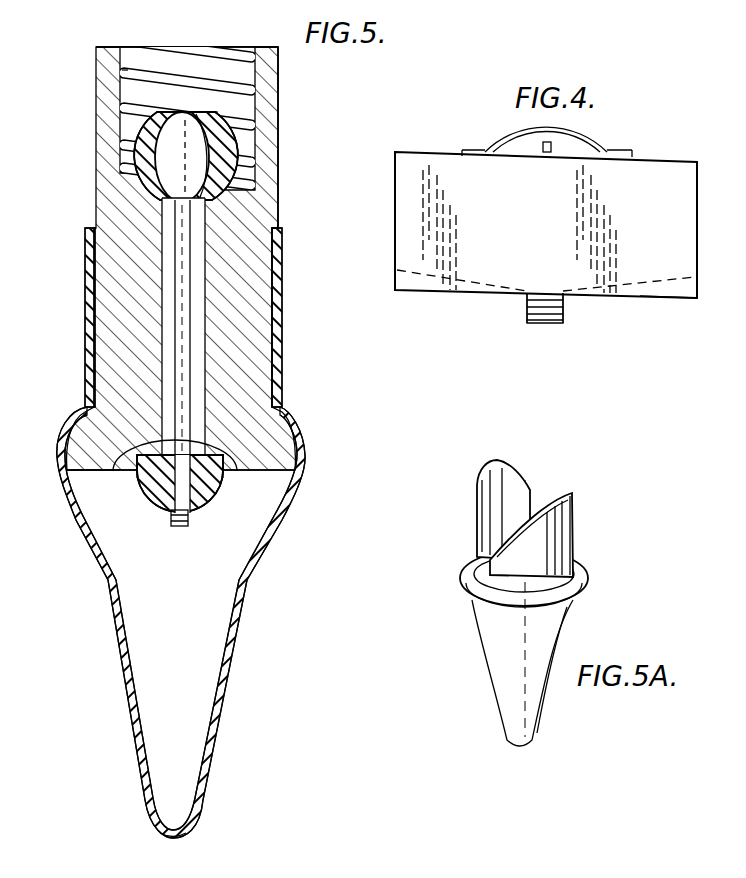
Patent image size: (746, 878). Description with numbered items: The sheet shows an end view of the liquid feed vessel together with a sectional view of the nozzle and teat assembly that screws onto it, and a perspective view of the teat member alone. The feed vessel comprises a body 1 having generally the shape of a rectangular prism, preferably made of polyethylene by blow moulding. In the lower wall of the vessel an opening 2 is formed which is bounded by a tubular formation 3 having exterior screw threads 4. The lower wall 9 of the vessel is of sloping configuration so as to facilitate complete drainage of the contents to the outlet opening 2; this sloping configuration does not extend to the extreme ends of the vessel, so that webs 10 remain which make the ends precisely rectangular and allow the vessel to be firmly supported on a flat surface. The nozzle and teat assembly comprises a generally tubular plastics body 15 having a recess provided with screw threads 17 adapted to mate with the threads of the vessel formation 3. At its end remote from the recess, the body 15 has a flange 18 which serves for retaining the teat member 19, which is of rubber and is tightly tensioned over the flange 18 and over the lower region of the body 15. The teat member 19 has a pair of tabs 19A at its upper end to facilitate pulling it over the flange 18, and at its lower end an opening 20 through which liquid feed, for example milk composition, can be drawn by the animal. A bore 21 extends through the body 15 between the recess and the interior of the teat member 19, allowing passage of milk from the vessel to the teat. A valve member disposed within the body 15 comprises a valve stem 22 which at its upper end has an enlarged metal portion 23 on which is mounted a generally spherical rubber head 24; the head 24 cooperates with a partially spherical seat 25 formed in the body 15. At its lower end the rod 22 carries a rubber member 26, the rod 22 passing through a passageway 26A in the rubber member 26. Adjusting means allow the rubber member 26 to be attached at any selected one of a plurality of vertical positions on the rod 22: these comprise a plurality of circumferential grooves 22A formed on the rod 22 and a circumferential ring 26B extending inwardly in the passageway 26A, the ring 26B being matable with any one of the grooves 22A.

In FIG. 4, the body 1 is at (652, 178).
In FIG. 4, the opening 2 is at (545, 323).
In FIG. 4, the tubular formation 3 is at (527, 318).
In FIG. 4, the exterior screw threads 4 is at (563, 306).
In FIG. 4, the lower wall 9 is at (670, 273).
In FIG. 4, the webs 10 is at (680, 292).
In FIG. 5, the body 15 is at (278, 90).
In FIG. 5, the screw threads 17 is at (135, 73).
In FIG. 5, the flange 18 is at (90, 450).
In FIG. 5, the teat member 19 is at (250, 547).
In FIG. 5A, the teat member 19 is at (490, 650).
In FIG. 5A, the tabs 19A is at (543, 523).
In FIG. 5, the opening 20 is at (177, 835).
In FIG. 5, the bore 21 is at (200, 270).
In FIG. 5, the valve stem 22 is at (192, 333).
In FIG. 5, the circumferential grooves 22A is at (176, 526).
In FIG. 5, the enlarged metal portion 23 is at (167, 162).
In FIG. 5, the rubber head 24 is at (222, 153).
In FIG. 5, the partially spherical seat 25 is at (218, 193).
In FIG. 5, the rubber member 26 is at (186, 475).
In FIG. 5, the passageway 26A is at (223, 478).
In FIG. 5, the circumferential ring 26B is at (140, 512).